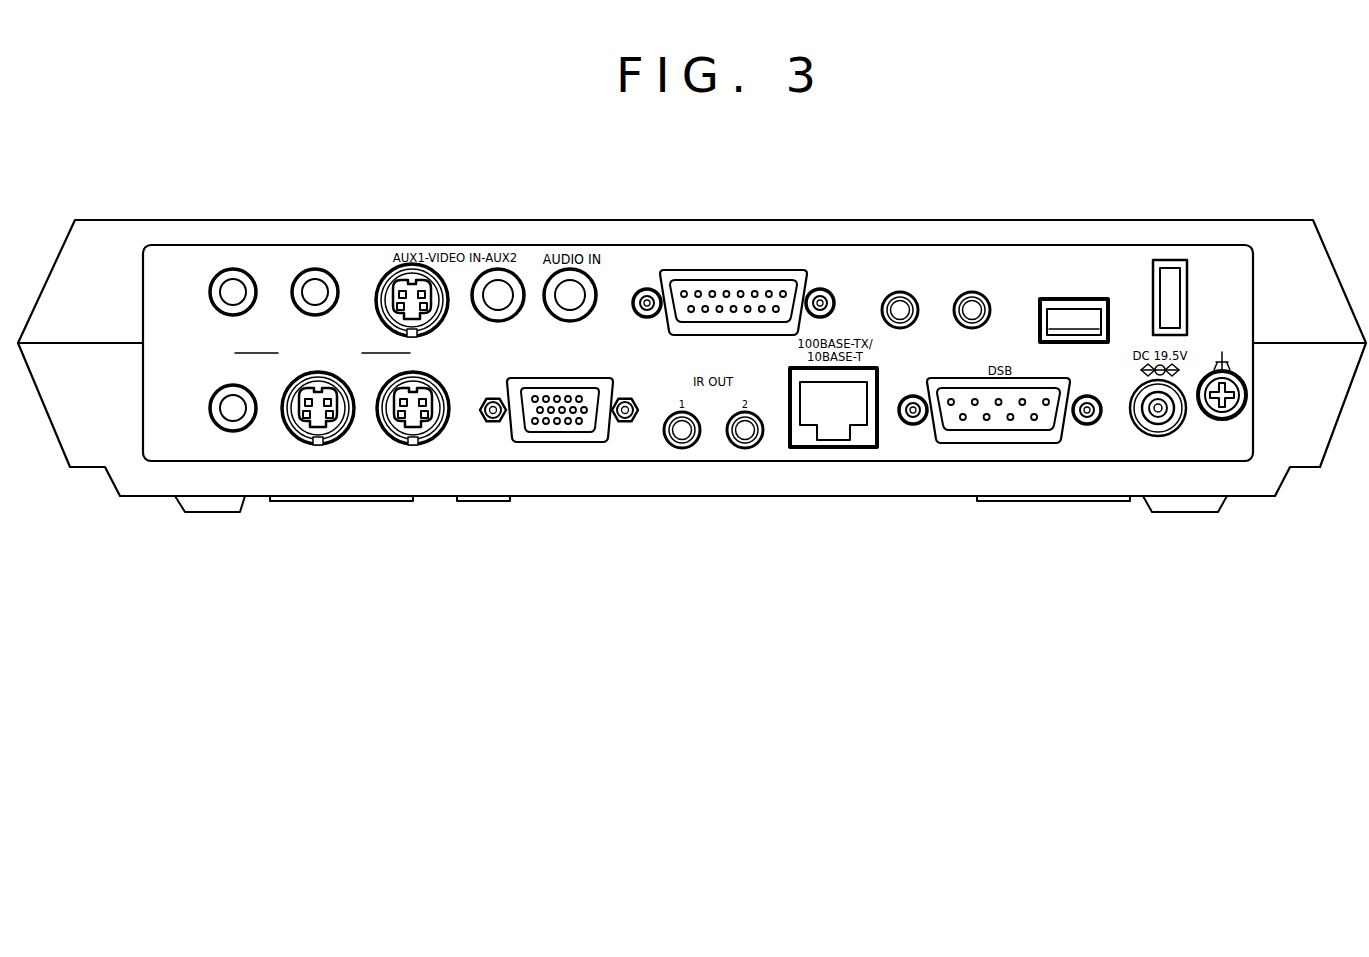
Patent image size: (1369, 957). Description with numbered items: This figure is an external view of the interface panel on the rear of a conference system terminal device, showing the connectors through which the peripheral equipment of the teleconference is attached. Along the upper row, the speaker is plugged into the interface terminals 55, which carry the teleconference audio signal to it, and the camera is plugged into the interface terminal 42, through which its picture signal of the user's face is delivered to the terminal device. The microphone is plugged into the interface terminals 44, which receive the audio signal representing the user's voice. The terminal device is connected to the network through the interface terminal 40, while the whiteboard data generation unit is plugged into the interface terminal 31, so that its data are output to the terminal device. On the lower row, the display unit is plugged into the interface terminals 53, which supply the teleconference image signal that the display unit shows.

The interface terminals 55 is at (320, 292).
The interface terminal 42 is at (784, 294).
The interface terminals 44 is at (905, 295).
The interface terminal 40 is at (1108, 318).
The interface terminal 31 is at (1168, 278).
The interface terminals 53 is at (246, 426).